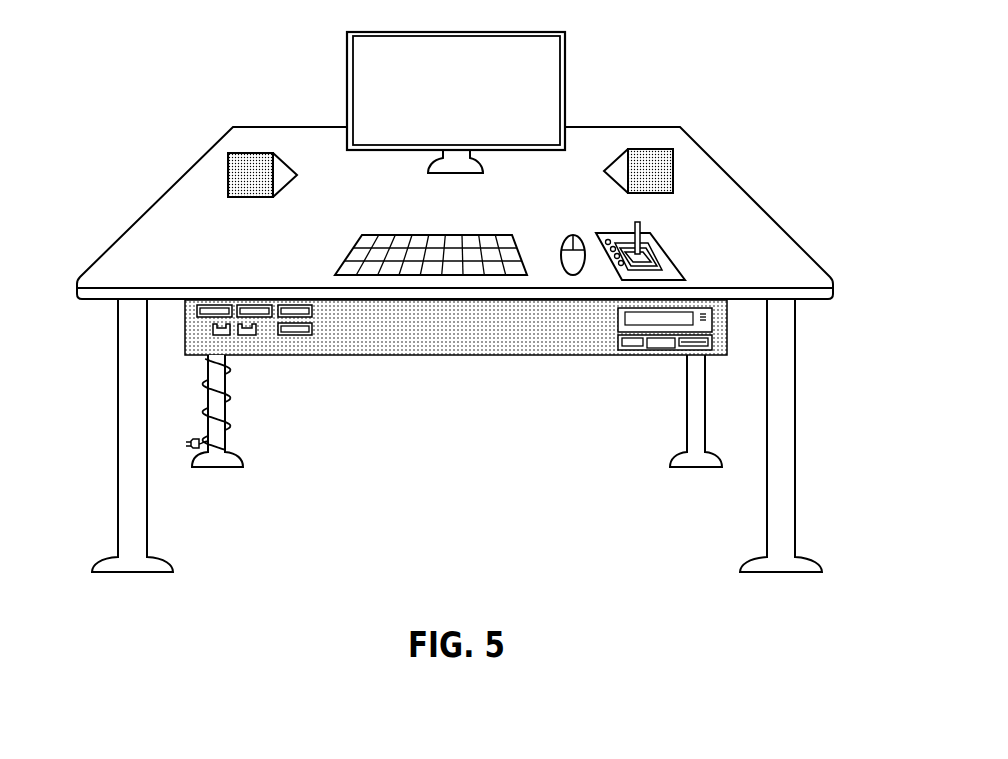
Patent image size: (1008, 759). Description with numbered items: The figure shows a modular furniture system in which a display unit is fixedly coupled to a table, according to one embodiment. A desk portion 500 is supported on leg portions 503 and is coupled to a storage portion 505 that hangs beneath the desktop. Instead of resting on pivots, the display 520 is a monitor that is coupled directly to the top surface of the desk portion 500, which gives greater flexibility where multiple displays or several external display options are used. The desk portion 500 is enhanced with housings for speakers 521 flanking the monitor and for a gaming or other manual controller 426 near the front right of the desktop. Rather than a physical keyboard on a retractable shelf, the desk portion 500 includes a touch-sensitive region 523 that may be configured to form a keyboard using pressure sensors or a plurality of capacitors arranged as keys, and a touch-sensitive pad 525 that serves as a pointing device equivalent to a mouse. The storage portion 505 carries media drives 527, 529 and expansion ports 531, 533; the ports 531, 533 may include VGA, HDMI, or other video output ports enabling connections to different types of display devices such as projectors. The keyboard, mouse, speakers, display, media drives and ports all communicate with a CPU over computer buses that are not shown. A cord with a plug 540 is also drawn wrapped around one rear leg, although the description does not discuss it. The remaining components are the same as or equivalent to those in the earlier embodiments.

The desk portion 500 is at (455, 211).
The display 520 is at (411, 89).
The speakers 521 is at (712, 133).
The touch-sensitive region 523 is at (288, 230).
The manual controller 426 is at (702, 218).
The touch-sensitive pad 525 is at (616, 321).
The storage portion 505 is at (456, 367).
The expansion port 531 is at (292, 364).
The expansion port 533 is at (286, 390).
The media drive 527 is at (753, 317).
The media drive 529 is at (751, 366).
The leg portion 503 is at (100, 435).
The power cord and plug 540 is at (140, 411).